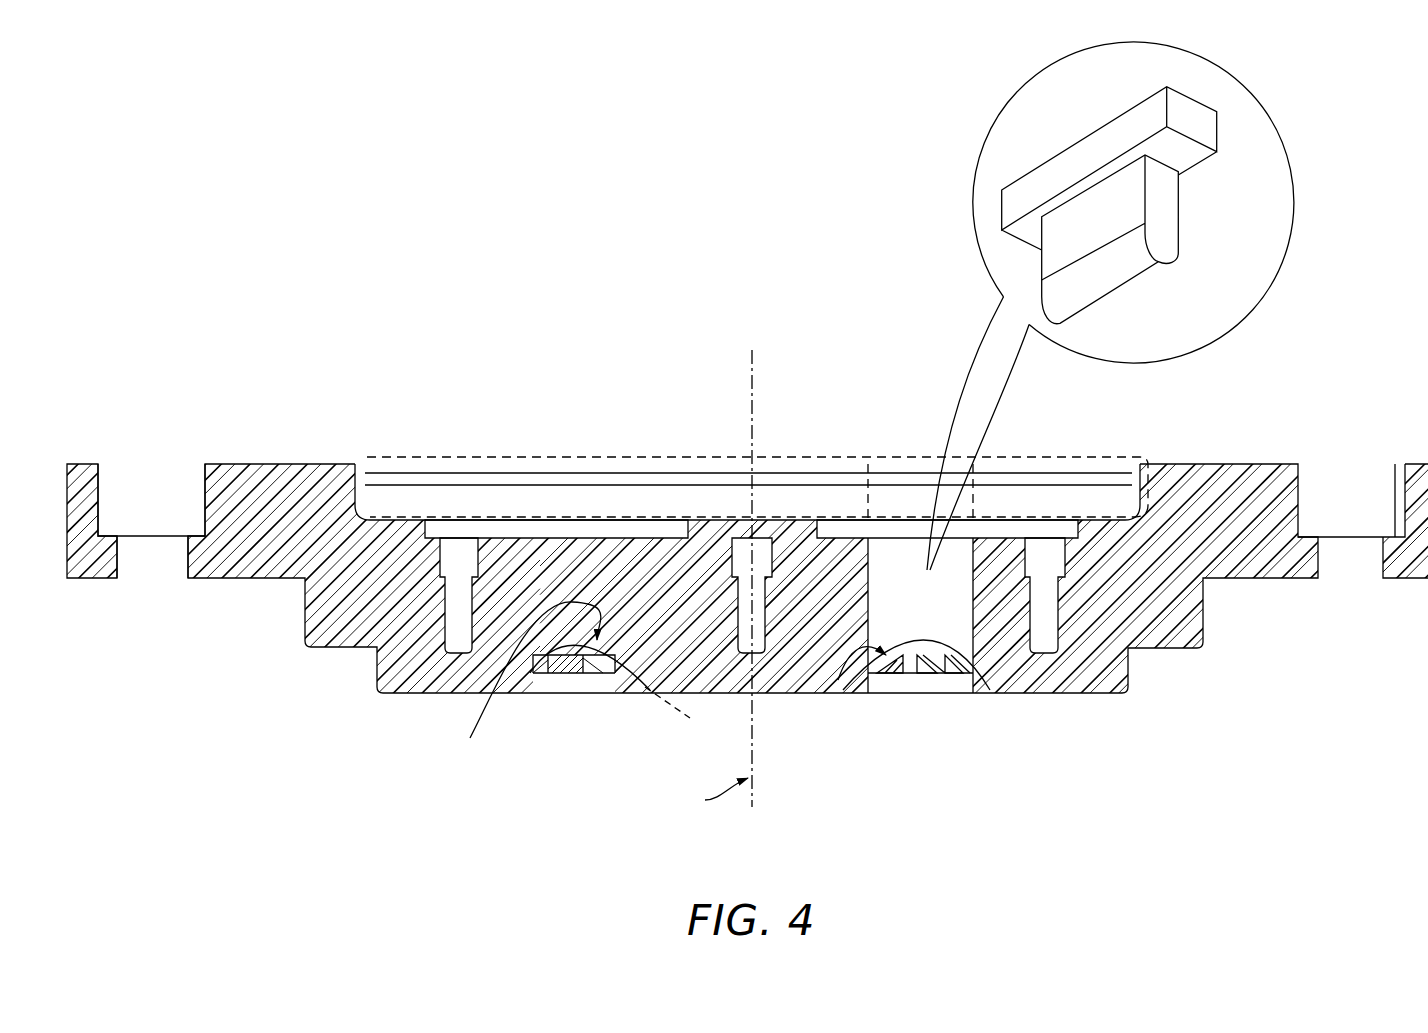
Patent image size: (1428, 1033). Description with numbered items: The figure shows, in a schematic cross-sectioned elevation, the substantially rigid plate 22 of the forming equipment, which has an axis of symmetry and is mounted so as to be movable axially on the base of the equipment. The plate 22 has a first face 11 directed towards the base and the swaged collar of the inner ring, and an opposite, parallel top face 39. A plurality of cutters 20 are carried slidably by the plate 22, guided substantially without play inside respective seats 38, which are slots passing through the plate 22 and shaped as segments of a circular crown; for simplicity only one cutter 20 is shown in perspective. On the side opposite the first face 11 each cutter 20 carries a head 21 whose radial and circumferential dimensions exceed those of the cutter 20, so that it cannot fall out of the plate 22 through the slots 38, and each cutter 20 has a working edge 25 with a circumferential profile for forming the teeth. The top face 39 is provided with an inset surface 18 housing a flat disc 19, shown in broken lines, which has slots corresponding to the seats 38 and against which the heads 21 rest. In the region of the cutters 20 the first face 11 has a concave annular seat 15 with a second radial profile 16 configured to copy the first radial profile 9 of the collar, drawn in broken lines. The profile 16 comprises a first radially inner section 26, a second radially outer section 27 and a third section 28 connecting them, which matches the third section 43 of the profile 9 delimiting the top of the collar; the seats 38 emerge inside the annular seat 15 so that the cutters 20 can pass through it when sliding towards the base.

The first predefined radial profile 9 is at (670, 717).
The first face 11 is at (1115, 705).
The concave annular seat 15 is at (862, 697).
The second radial profile 16 is at (520, 682).
The inset surface 18 is at (399, 512).
The flat disc 19 is at (664, 454).
The cutter 20 is at (1110, 306).
The head 21 is at (1080, 157).
The plate 22 is at (714, 549).
The working edge 25 is at (1113, 268).
The first radially inner section 26 is at (838, 690).
The second radially outer section 27 is at (990, 675).
The third section 28 is at (937, 630).
The seat 38 is at (893, 567).
The top face 39 is at (228, 460).
The third section 43 is at (518, 693).